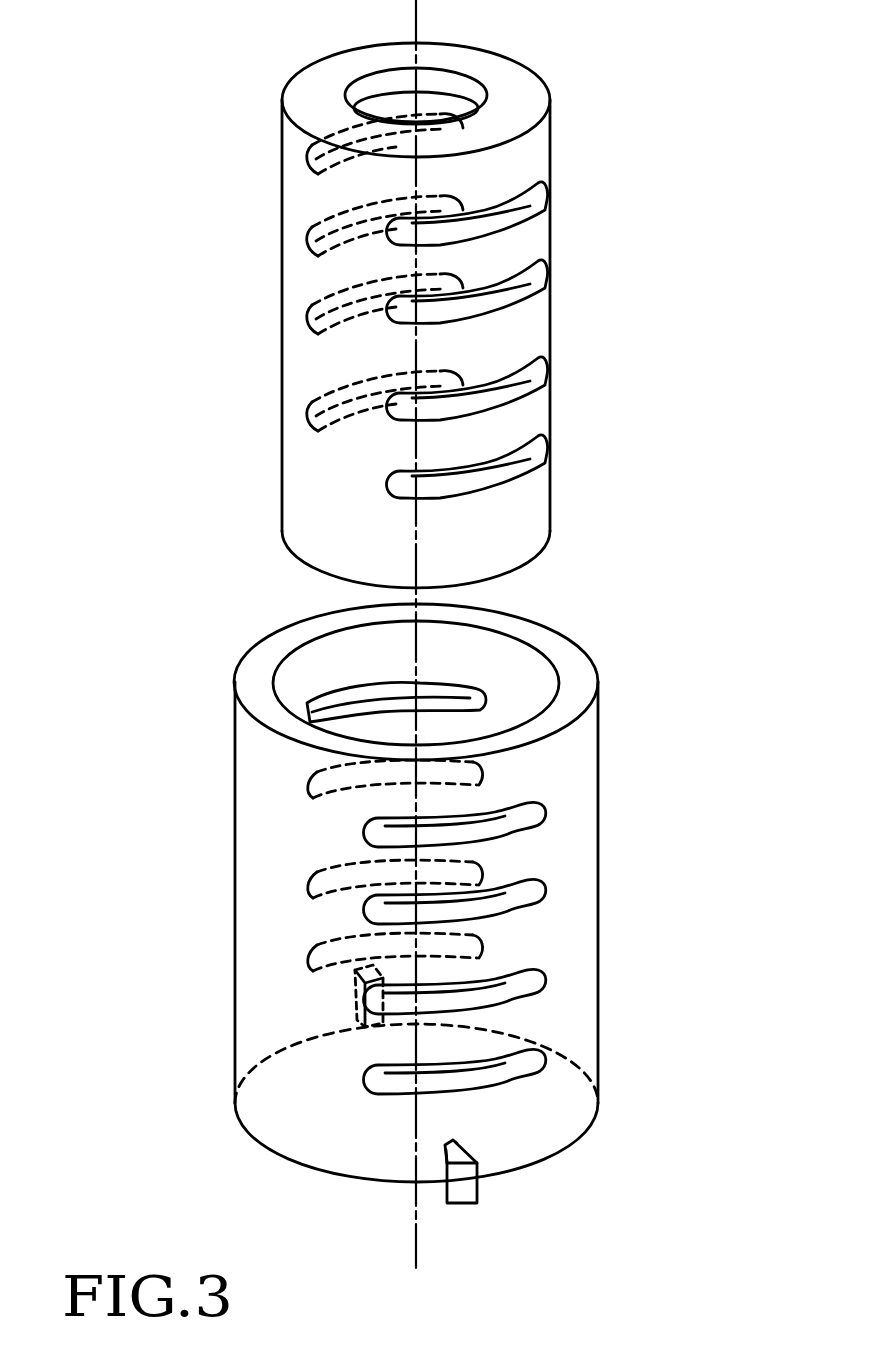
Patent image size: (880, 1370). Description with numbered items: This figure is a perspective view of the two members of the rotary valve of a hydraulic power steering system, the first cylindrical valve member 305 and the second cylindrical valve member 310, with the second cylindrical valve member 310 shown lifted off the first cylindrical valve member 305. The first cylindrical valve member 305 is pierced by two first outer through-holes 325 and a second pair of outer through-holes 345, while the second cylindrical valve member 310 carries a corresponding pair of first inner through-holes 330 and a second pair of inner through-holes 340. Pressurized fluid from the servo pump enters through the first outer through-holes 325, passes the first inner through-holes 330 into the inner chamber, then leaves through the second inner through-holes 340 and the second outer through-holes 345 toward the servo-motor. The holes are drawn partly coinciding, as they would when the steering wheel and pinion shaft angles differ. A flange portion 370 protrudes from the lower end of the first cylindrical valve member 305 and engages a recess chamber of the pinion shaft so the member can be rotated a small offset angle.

The first cylindrical valve member 305 is at (625, 640).
The second cylindrical valve member 310 is at (583, 88).
The first outer through-holes 325 is at (505, 914).
The first inner through-holes 330 is at (522, 288).
The second pair of inner through-holes 340 is at (518, 462).
The second pair of outer through-holes 345 is at (500, 1077).
The flange portion 370 is at (478, 1197).